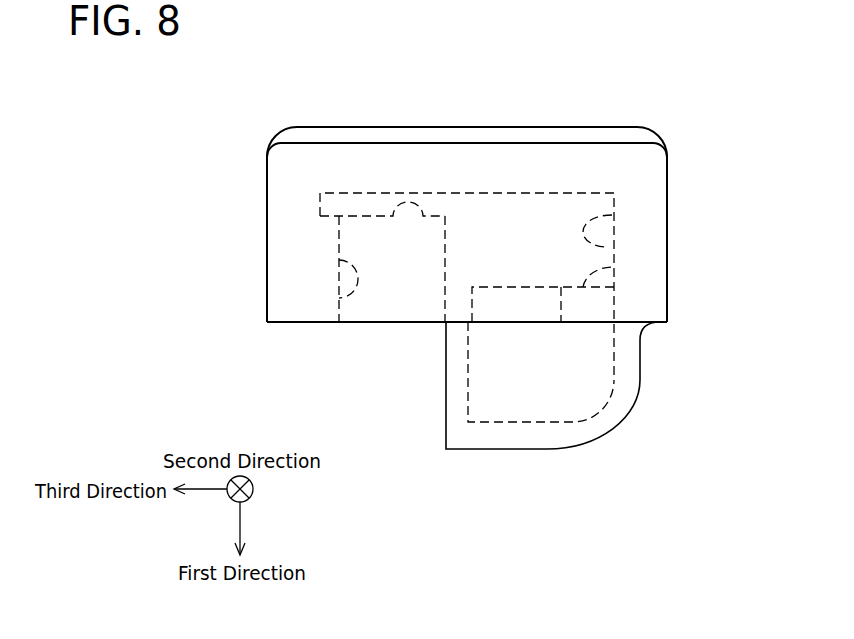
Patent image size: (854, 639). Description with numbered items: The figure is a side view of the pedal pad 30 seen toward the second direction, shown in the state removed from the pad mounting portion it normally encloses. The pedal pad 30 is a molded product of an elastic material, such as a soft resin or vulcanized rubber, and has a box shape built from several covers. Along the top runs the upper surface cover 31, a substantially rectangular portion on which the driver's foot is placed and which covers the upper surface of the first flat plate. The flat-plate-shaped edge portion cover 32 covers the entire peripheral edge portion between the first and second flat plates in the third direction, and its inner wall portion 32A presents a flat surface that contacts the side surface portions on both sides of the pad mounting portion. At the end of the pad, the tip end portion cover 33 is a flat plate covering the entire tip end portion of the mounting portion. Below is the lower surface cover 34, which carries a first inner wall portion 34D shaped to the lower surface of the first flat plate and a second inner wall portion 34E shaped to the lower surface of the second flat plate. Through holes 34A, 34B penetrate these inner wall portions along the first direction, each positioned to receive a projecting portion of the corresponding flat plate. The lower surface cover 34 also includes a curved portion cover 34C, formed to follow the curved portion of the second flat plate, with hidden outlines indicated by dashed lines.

The pedal pad 30 is at (185, 140).
The upper surface cover 31 is at (366, 137).
The edge portion cover 32 is at (266, 179).
The inner wall portion 32A is at (607, 247).
The tip end portion cover 33 is at (461, 167).
The lower surface cover 34 is at (446, 413).
The through hole 34A is at (338, 298).
The through hole 34B is at (559, 293).
The curved portion cover 34C is at (603, 417).
The first inner wall portion 34D is at (425, 217).
The second inner wall portion 34E is at (613, 267).